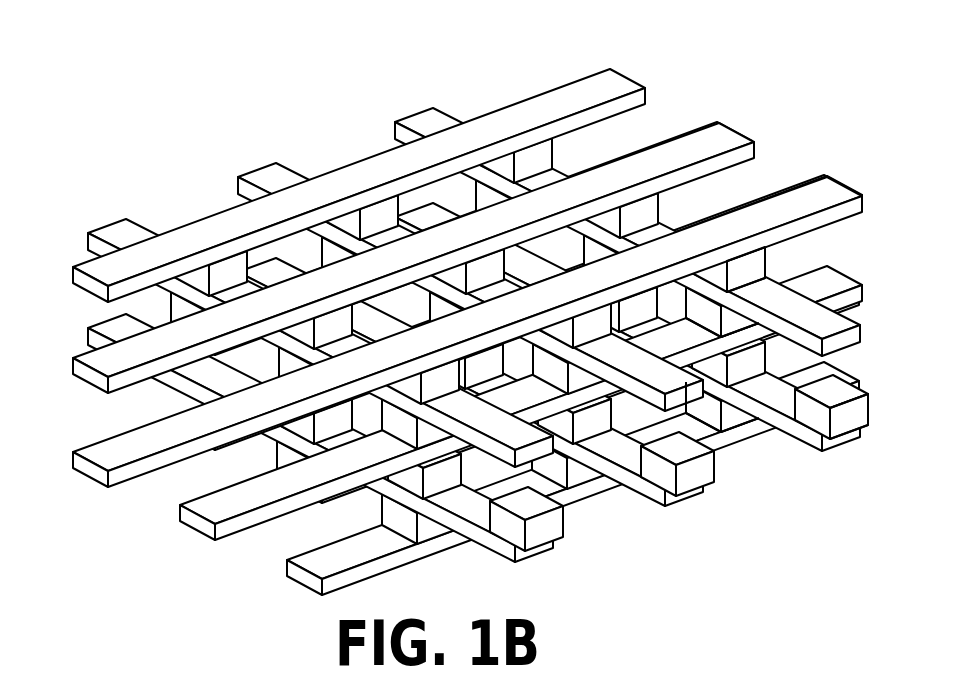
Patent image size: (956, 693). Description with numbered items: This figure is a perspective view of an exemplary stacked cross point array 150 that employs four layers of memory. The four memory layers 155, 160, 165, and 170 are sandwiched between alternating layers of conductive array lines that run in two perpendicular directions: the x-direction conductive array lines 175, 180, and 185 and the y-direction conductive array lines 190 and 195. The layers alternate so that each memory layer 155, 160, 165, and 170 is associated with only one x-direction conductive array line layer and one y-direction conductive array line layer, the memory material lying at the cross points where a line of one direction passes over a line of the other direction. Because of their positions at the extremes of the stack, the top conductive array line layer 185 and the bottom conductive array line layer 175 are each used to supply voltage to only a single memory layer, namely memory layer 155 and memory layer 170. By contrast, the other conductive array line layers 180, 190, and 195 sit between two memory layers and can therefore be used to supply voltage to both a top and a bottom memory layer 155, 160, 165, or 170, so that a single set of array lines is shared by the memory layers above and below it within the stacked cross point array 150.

The stacked cross point array 150 is at (448, 303).
The memory layer 155 is at (713, 403).
The memory layer 160 is at (752, 358).
The memory layer 165 is at (732, 323).
The memory layer 170 is at (770, 262).
The x-direction conductive array line 175 is at (108, 451).
The x-direction conductive array line 180 is at (84, 359).
The x-direction conductive array line 185 is at (84, 268).
The y-direction conductive array line 190 is at (540, 548).
The y-direction conductive array line 195 is at (540, 450).